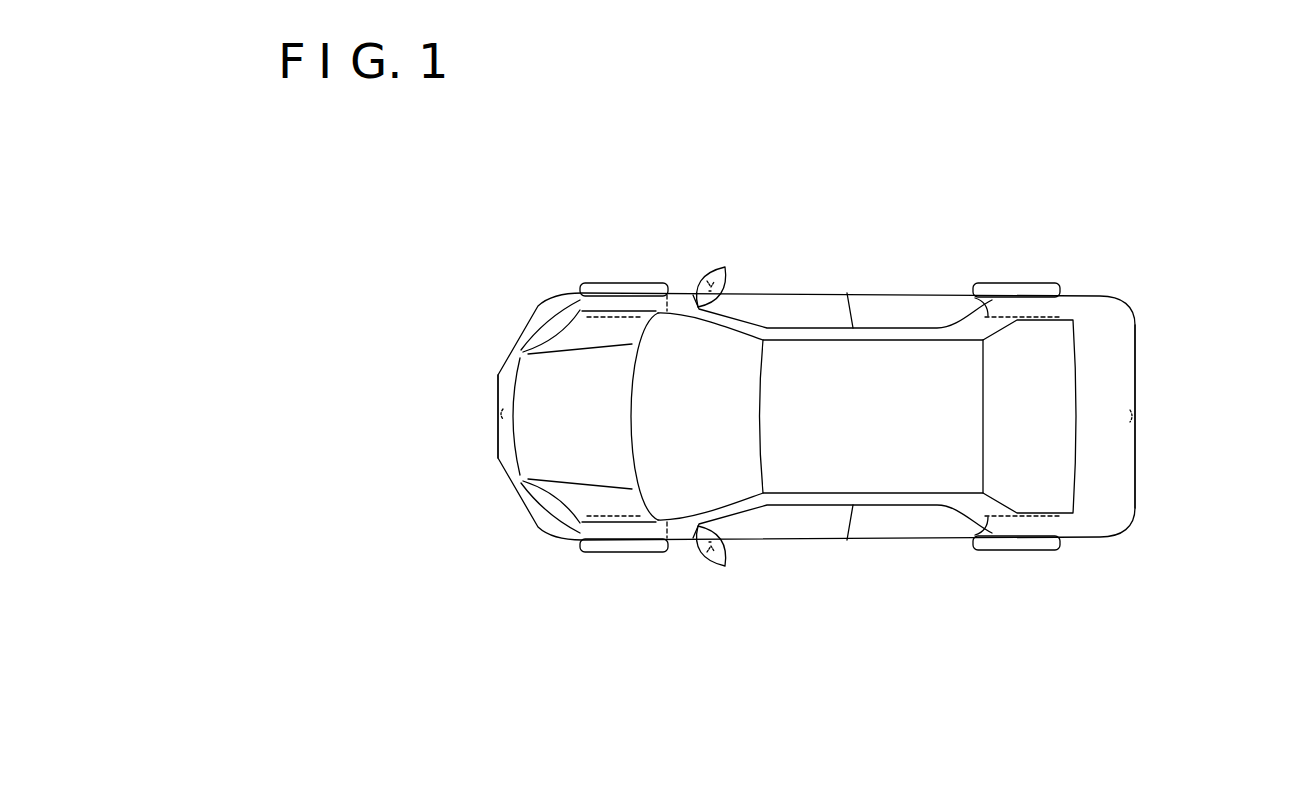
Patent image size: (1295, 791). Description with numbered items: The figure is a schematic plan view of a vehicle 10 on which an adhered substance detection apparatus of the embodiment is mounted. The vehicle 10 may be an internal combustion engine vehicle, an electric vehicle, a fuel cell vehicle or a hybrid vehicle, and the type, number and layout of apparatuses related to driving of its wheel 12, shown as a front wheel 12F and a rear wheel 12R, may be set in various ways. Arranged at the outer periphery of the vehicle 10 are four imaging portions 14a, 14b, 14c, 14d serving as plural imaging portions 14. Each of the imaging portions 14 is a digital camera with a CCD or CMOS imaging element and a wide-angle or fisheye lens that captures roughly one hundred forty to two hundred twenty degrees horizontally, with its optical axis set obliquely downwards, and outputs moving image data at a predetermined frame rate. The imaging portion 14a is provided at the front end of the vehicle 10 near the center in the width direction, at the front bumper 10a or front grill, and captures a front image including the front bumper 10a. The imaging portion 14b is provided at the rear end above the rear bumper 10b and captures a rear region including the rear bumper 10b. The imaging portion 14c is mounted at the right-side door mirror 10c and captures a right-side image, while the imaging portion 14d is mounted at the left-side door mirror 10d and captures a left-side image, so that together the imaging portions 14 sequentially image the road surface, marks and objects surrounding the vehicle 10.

The vehicle 10 is at (855, 231).
The front bumper 10a is at (500, 378).
The rear bumper 10b is at (1135, 379).
The right-side door mirror 10c is at (727, 281).
The left-side door mirror 10d is at (728, 554).
The wheel 12 is at (832, 419).
The front wheel 12F is at (610, 282).
The rear wheel 12R is at (1028, 283).
The imaging portions 14 is at (842, 419).
The imaging portion 14a is at (500, 414).
The imaging portion 14b is at (1133, 418).
The imaging portion 14c is at (713, 267).
The imaging portion 14d is at (715, 568).